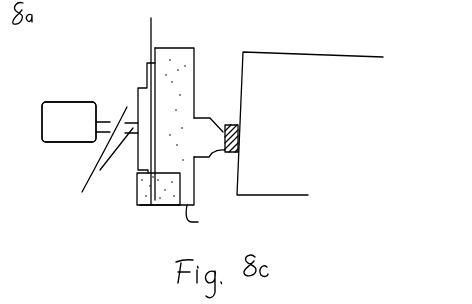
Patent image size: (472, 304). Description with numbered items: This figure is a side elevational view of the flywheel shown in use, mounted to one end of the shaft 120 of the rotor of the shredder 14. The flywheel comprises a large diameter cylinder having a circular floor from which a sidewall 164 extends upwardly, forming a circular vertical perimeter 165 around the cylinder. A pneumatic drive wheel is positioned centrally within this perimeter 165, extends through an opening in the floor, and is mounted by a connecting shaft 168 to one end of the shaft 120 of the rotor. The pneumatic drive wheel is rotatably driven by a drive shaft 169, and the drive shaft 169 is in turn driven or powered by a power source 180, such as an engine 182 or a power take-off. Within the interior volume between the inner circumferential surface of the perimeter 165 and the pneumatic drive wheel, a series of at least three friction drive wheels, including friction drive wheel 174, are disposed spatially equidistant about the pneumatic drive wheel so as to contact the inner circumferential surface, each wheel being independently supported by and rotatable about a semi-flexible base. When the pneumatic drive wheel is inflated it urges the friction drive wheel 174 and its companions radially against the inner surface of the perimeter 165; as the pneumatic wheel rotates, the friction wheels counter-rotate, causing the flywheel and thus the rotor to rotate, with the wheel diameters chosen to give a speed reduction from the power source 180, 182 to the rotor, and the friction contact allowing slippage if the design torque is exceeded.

The shredder 14 is at (315, 52).
The shaft 120 is at (220, 90).
The sidewall 164 is at (163, 48).
The circular vertical perimeter 165 is at (208, 215).
The connecting shaft 168 is at (195, 160).
The drive shaft 169 is at (95, 166).
The friction drive wheel 174 is at (142, 203).
The power source 180 is at (68, 100).
The engine 182 is at (68, 100).